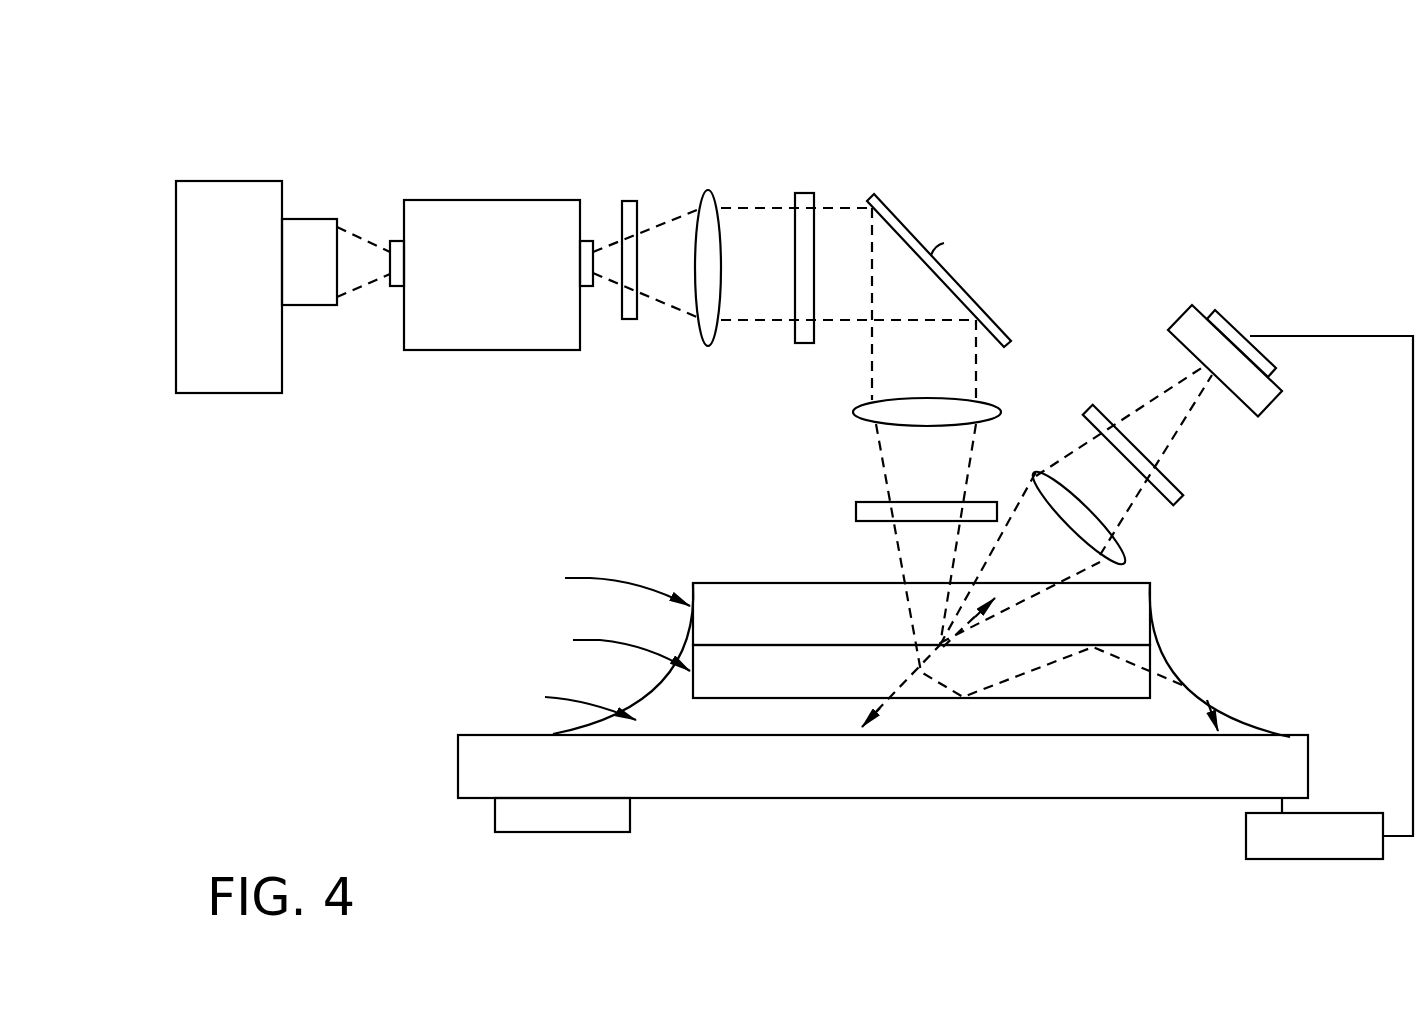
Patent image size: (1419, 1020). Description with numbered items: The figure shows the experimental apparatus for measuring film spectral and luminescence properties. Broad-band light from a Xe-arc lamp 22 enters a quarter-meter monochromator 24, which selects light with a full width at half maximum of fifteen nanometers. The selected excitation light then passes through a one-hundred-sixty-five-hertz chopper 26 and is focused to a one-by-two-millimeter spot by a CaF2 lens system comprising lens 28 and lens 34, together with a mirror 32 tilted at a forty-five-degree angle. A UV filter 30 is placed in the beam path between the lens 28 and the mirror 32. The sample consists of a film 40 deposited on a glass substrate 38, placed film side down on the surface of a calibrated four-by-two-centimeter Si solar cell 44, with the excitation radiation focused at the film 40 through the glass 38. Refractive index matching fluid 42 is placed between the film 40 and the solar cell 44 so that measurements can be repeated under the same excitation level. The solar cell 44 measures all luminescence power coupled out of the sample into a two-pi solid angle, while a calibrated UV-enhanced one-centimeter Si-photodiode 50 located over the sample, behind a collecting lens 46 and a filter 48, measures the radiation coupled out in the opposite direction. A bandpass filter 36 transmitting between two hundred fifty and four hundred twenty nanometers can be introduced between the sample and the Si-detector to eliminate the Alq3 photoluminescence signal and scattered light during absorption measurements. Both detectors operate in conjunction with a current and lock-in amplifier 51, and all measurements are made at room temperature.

The Xe-arc lamp 22 is at (188, 292).
The monochromator 24 is at (455, 213).
The chopper 26 is at (628, 208).
The CaF2 lens 28 is at (706, 190).
The UV filter 30 is at (807, 197).
The tilted mirror 32 is at (876, 198).
The CaF2 lens 34 is at (983, 415).
The bandpass filter 36 is at (866, 513).
The glass substrate 38 is at (1128, 622).
The film 40 is at (1142, 654).
The refractive index matching fluid 42 is at (1225, 723).
The Si solar cell 44 is at (1300, 757).
The lens 46 is at (1123, 560).
The filter 48 is at (1177, 492).
The Si-photodiode 50 is at (1270, 397).
The current and lock-in amplifier 51 is at (1317, 853).